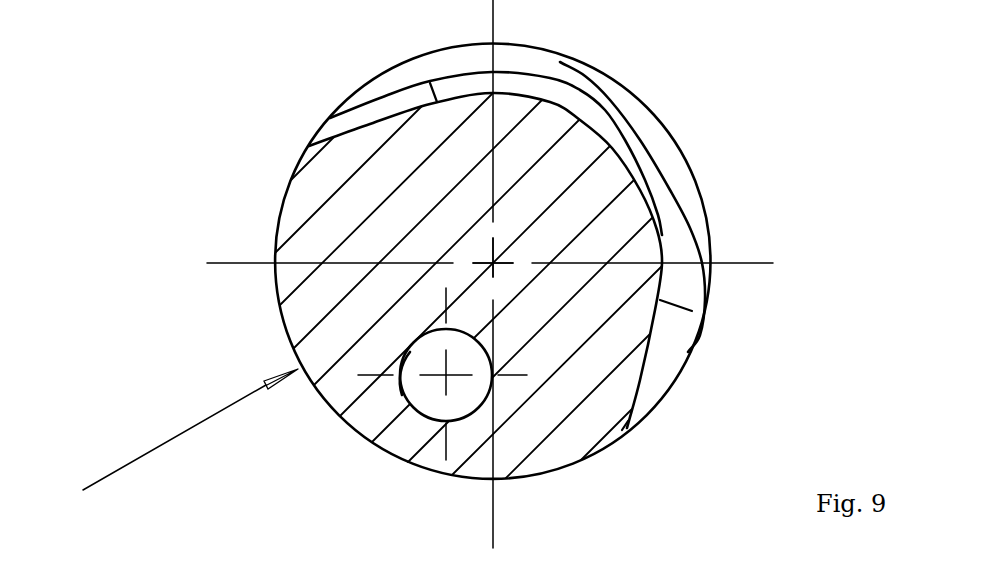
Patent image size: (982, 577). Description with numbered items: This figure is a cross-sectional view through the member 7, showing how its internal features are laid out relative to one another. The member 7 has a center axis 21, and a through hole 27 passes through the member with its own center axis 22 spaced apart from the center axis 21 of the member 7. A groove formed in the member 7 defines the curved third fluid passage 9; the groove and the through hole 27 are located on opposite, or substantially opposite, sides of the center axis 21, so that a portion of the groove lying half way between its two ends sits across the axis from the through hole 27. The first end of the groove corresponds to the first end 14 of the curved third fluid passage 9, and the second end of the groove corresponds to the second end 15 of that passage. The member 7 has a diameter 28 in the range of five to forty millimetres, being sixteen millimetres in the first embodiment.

The member 7 is at (335, 222).
The curved third fluid passage 9 is at (616, 133).
The first end of the curved third fluid passage 14 is at (661, 403).
The second end of the curved third fluid passage 15 is at (330, 118).
The center axis of the member 21 is at (493, 263).
The center axis of the through hole 22 is at (408, 412).
The through hole 27 is at (420, 384).
The diameter 28 is at (190, 429).